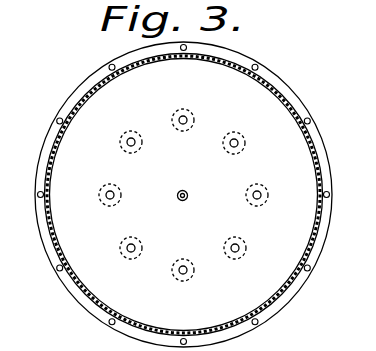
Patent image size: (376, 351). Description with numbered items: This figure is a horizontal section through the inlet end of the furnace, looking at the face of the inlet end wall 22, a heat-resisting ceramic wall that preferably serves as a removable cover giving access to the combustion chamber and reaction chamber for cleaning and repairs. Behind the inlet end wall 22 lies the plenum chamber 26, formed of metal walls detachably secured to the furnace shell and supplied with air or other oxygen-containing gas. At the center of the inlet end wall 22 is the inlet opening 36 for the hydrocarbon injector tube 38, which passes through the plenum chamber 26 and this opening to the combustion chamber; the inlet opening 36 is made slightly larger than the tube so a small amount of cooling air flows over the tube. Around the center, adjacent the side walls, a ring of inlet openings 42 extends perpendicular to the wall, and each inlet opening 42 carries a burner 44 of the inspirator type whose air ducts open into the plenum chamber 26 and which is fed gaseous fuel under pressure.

The inlet end wall 22 is at (243, 82).
The plenum chamber 26 is at (284, 95).
The inlet opening 36 is at (187, 198).
The hydrocarbon injector tube 38 is at (178, 198).
The inlet openings 42 is at (246, 144).
The burner 44 is at (232, 147).